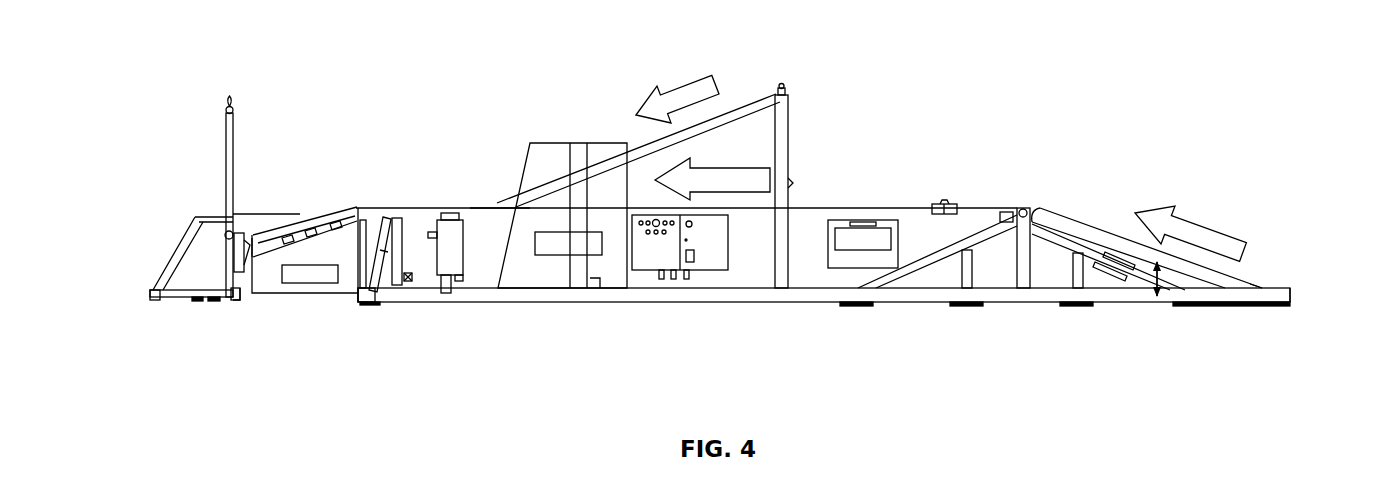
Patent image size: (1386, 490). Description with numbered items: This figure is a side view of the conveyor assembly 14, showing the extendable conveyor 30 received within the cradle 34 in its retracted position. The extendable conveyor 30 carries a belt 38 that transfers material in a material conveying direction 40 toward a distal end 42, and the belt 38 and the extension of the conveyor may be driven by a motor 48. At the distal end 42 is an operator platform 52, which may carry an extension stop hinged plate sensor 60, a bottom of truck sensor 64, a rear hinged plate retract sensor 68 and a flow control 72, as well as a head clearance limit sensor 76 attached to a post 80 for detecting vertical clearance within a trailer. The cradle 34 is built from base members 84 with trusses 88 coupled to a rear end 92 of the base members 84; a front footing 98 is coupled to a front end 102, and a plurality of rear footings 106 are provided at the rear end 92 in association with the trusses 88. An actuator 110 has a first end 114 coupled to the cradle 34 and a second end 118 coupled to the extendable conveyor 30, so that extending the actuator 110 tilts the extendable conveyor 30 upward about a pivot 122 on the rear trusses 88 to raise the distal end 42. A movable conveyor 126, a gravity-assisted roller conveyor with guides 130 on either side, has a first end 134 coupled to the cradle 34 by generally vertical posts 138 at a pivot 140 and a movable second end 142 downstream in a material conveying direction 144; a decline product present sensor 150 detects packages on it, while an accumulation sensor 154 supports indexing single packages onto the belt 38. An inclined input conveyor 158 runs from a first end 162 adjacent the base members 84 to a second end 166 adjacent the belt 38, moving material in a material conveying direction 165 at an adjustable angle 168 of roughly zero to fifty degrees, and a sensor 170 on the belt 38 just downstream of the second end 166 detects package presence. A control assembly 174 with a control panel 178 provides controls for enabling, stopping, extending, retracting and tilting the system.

The conveyor assembly 14 is at (133, 104).
The extendable conveyor 30 is at (372, 158).
The cradle 34 is at (722, 300).
The base members 84 is at (823, 272).
The belt 38 is at (470, 207).
The material conveying direction 40 is at (710, 167).
The distal end 42 is at (160, 252).
The motor 48 is at (453, 297).
The operator platform 52 is at (188, 282).
The extension stop hinged plate sensor 60 is at (147, 295).
The bottom of truck sensor 64 is at (227, 292).
The rear hinged plate retract sensor 68 is at (235, 297).
The flow control 72 is at (224, 214).
The head clearance limit sensor 76 is at (195, 181).
The post 80 is at (226, 148).
The trusses 88 is at (1023, 268).
The rear end 92 is at (1300, 296).
The front footing 98 is at (372, 303).
The front end 102 is at (328, 320).
The rear footings 106 is at (847, 307).
The actuator 110 is at (409, 283).
The first end 114 is at (373, 307).
The second end 118 is at (390, 213).
The pivot 122 is at (1020, 206).
The movable conveyor 126 is at (620, 125).
The guides 130 is at (559, 176).
The first end 134 is at (787, 93).
The posts 138 is at (790, 183).
The pivot 140 is at (808, 156).
The second end 142 is at (620, 125).
The material conveying direction 144 is at (683, 80).
The decline product present sensor 150 is at (598, 147).
The accumulation sensor 154 is at (524, 143).
The input conveyor 158 is at (1167, 216).
The first end 162 is at (1267, 284).
The material conveying direction 165 is at (1193, 217).
The second end 166 is at (1167, 216).
The angle 168 is at (1178, 290).
The sensor 170 is at (940, 203).
The control assembly 174 is at (652, 318).
The control panel 178 is at (683, 270).